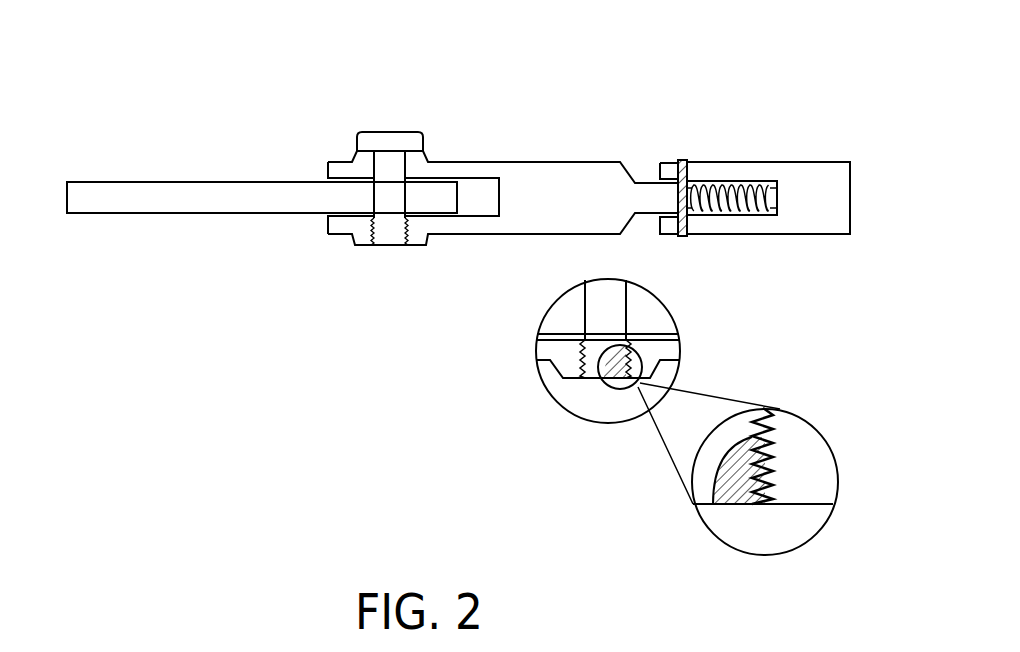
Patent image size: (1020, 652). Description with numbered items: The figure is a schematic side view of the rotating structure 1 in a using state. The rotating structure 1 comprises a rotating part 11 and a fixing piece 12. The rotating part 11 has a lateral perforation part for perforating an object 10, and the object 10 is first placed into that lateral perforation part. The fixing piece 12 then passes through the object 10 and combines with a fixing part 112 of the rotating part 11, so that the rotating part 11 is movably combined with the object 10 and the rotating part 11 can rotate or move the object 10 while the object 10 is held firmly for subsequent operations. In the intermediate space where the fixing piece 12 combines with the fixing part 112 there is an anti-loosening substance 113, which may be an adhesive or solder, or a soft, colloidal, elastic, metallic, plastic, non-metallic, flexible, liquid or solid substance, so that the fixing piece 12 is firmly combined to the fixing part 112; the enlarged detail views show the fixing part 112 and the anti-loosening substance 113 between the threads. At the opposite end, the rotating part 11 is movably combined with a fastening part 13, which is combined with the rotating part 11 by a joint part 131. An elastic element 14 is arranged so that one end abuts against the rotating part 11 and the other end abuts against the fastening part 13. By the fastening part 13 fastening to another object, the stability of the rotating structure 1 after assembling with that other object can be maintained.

The rotating structure 1 is at (298, 112).
The object 10 is at (188, 205).
The rotating part 11 is at (558, 173).
The fixing piece 12 is at (395, 138).
The fixing part 112 is at (376, 226).
The anti-loosening substance 113 is at (770, 443).
The fastening part 13 is at (803, 170).
The joint part 131 is at (682, 163).
The elastic element 14 is at (750, 210).